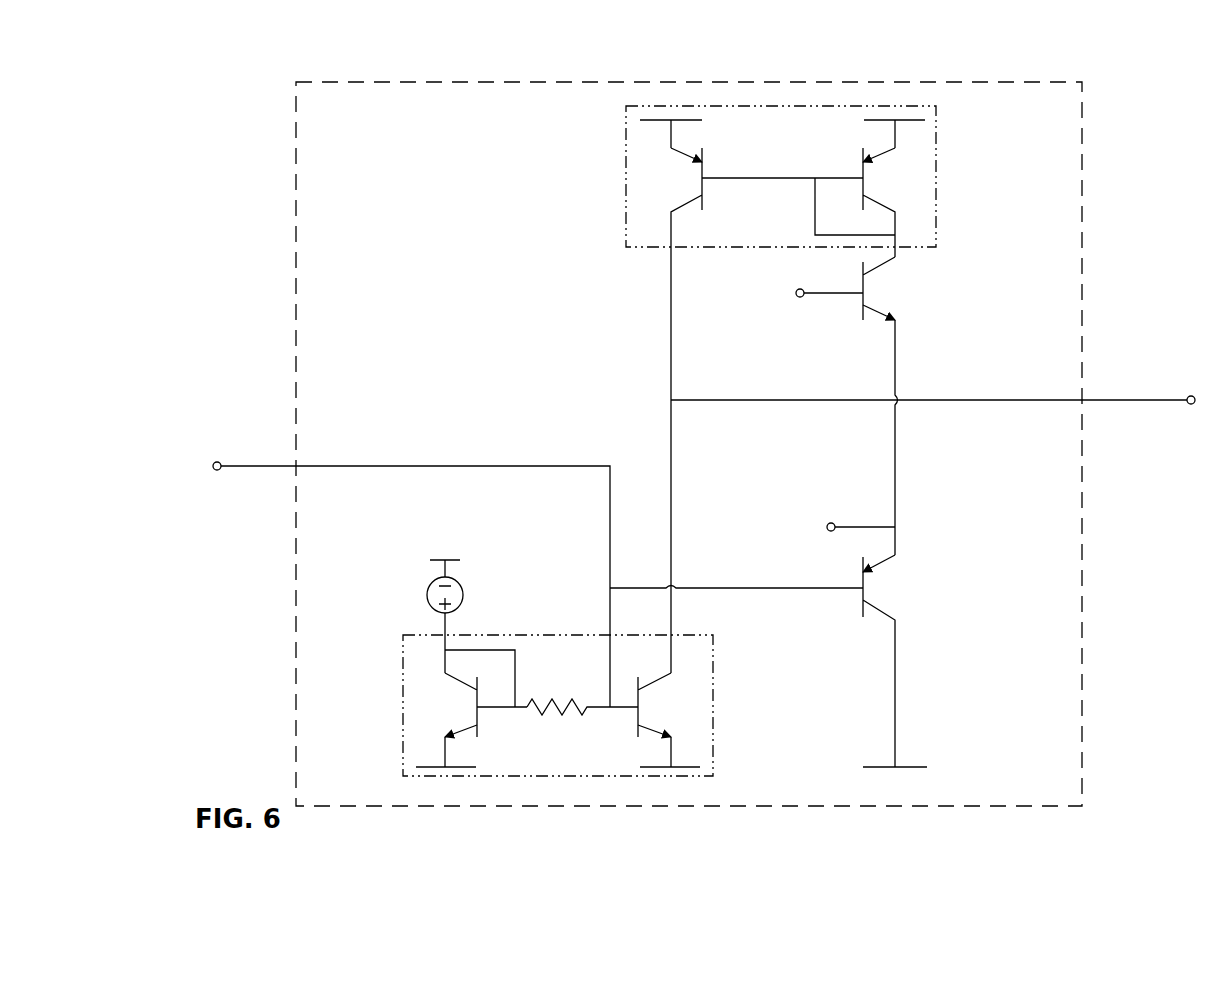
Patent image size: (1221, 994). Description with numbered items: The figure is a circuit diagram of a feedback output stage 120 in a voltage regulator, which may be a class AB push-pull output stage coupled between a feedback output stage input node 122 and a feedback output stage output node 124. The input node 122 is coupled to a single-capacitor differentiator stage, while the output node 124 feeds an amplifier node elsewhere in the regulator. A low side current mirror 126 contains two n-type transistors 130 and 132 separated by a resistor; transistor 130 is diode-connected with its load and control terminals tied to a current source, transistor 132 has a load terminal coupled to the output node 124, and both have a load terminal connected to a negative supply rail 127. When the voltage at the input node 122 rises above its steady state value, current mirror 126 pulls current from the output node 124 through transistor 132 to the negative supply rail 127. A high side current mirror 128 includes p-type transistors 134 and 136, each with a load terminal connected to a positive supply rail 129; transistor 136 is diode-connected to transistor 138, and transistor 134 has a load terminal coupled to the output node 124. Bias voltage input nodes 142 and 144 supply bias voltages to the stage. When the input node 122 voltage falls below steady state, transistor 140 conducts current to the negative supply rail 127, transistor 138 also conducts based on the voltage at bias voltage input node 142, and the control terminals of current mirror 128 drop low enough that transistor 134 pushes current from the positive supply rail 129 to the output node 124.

The feedback output stage 120 is at (296, 215).
The feedback output stage input node 122 is at (215, 470).
The feedback output stage output node 124 is at (1192, 405).
The current mirror 126 is at (403, 697).
The negative supply rail 127 is at (468, 770).
The current mirror 128 is at (627, 245).
The positive supply rail 129 is at (683, 115).
The transistor 130 is at (492, 737).
The transistor 132 is at (685, 728).
The transistor 134 is at (716, 156).
The transistor 136 is at (904, 167).
The transistor 138 is at (894, 293).
The transistor 140 is at (888, 583).
The bias voltage input node 142 is at (796, 297).
The bias voltage input node 144 is at (828, 531).